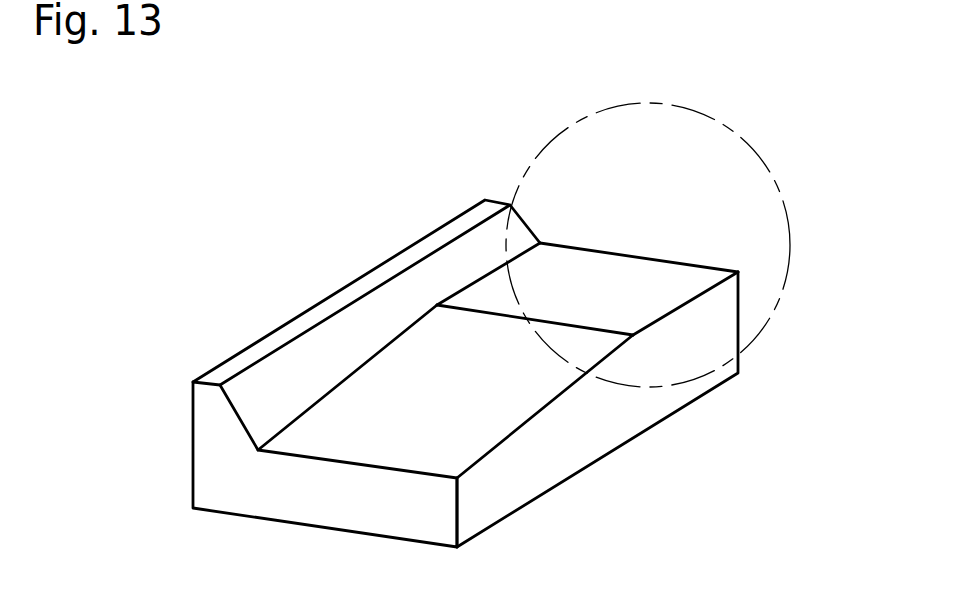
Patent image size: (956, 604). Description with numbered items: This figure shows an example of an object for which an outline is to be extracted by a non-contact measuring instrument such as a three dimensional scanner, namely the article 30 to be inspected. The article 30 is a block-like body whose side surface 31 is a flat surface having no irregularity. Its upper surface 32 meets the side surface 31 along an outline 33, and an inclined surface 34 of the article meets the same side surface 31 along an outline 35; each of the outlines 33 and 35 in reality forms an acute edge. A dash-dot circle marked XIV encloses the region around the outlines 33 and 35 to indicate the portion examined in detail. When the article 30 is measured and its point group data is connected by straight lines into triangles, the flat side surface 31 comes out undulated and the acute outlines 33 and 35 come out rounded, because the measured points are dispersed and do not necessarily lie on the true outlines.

The article to be inspected 30 is at (313, 306).
The side surface 31 is at (597, 428).
The upper surface 32 is at (620, 277).
The outline 33 is at (690, 305).
The inclined surface 34 is at (380, 444).
The outline 35 is at (488, 457).
The detail view circle XIV is at (528, 168).